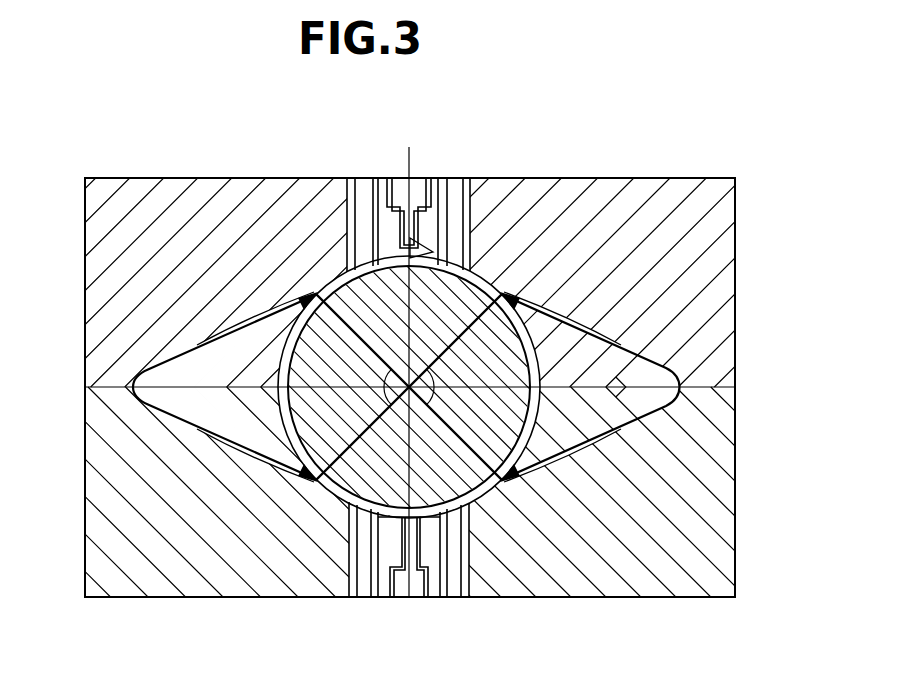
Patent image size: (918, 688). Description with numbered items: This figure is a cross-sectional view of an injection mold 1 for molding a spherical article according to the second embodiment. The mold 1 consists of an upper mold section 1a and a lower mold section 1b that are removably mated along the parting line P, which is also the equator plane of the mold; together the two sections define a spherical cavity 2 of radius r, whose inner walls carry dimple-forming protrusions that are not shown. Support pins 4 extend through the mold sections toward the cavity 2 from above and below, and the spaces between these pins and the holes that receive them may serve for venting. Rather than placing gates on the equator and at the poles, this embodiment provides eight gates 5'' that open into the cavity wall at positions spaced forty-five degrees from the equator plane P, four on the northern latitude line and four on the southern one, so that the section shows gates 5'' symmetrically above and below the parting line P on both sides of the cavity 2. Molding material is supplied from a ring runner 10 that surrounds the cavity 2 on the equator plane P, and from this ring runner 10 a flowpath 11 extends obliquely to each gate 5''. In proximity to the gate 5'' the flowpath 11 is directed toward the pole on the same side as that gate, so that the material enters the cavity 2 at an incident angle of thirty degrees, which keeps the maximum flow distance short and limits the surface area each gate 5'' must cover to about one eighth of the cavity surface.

The injection mold 1 is at (680, 165).
The upper mold section 1a is at (718, 247).
The lower mold section 1b is at (720, 493).
The spherical cavity 2 is at (327, 280).
The support pins 4 is at (363, 187).
The gates 5'' is at (385, 378).
The ring runner 10 is at (660, 370).
The flowpath 11 is at (610, 342).
The parting line P is at (105, 387).